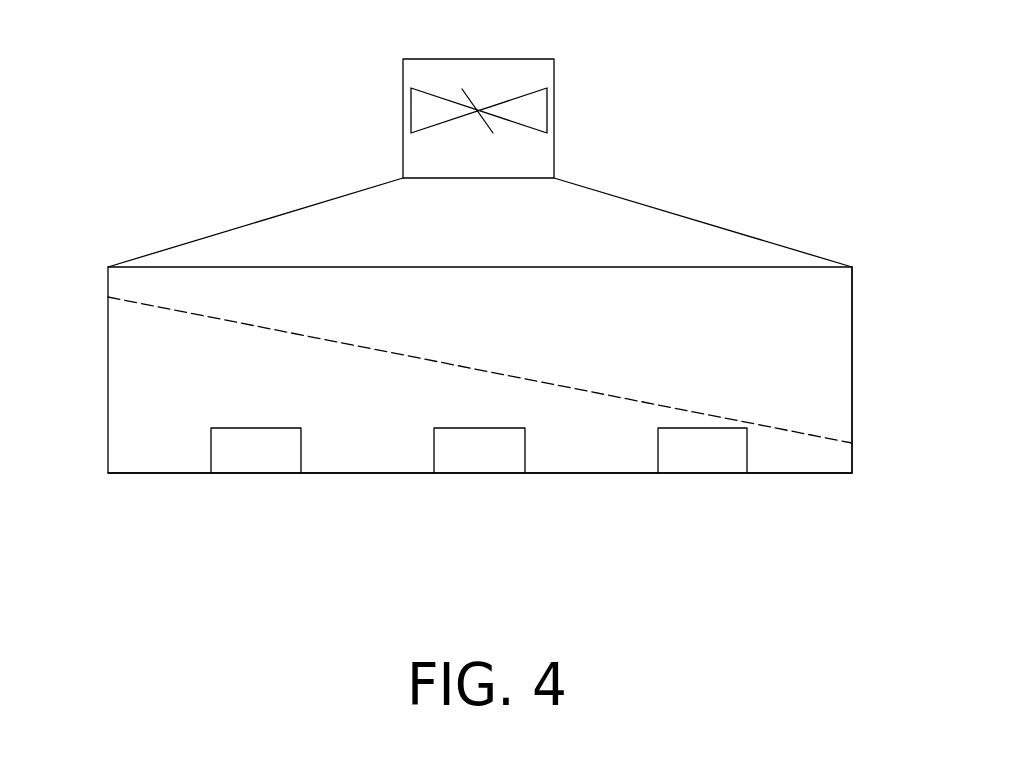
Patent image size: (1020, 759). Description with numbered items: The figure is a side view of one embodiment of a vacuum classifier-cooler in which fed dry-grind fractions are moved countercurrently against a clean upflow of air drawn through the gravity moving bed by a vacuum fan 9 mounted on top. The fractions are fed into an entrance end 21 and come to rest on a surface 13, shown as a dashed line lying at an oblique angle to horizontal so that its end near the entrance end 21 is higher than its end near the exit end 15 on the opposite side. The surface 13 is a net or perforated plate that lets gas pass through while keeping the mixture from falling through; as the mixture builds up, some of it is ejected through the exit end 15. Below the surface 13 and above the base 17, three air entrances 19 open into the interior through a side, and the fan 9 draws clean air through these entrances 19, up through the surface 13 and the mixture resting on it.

The vacuum fan 9 is at (418, 113).
The surface 13 is at (553, 383).
The exit end 15 is at (852, 407).
The classifier-cooler base 17 is at (378, 473).
The air entrances 19 is at (702, 464).
The entrance end 21 is at (128, 258).